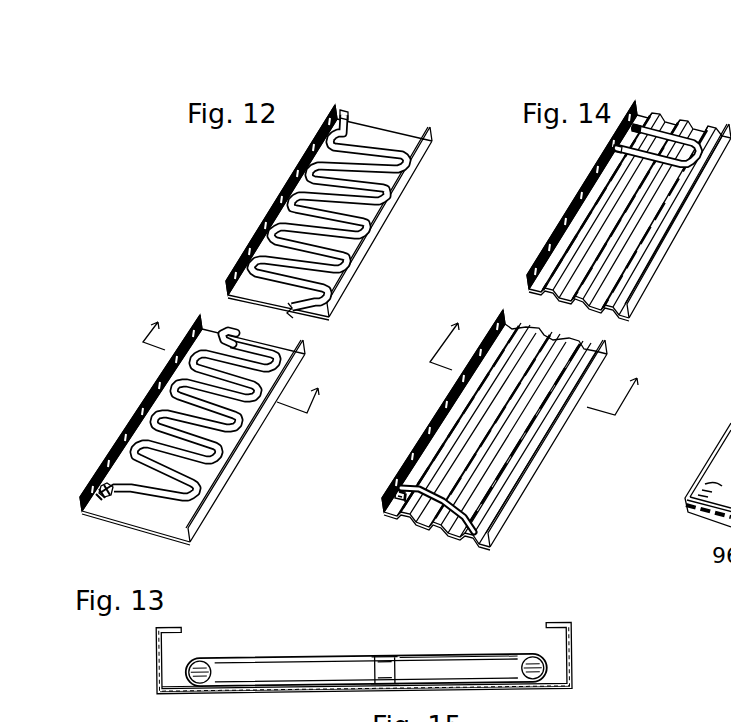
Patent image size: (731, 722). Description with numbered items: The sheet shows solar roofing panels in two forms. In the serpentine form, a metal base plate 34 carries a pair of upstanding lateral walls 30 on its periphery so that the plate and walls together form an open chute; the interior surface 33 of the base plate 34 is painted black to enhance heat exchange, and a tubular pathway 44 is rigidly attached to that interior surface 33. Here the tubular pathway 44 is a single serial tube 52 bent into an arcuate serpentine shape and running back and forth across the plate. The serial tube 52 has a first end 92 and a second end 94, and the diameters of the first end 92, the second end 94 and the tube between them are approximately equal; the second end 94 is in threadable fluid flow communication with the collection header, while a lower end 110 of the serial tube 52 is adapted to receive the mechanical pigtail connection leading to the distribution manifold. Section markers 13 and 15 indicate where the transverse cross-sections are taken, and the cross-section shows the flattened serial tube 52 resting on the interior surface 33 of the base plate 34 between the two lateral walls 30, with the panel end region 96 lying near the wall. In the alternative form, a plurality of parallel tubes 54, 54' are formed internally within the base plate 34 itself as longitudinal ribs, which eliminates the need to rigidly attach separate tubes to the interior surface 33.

In FIG. 12, the section line 13- 13 is at (238, 351).
In FIG. 14, the section line 15- 15 is at (556, 325).
In FIG. 13, the upstanding lateral walls 30 is at (157, 648).
In FIG. 13, the interior surface 33 is at (175, 690).
In FIG. 13, the metal base plate 34 is at (277, 692).
In FIG. 13, the tubular pathway 44 is at (492, 653).
In FIG. 12, the single serial tube 52 is at (371, 143).
In FIG. 13, the single serial tube 52 is at (207, 663).
In FIG. 14, the parallel tube 54 is at (523, 350).
In FIG. 14, the parallel tube 54' is at (437, 538).
In FIG. 12, the first end 92 is at (148, 490).
In FIG. 12, the second end 94 is at (345, 113).
In FIG. 12, the channel end 96 is at (329, 221).
In FIG. 12, the lower end 110 is at (113, 453).